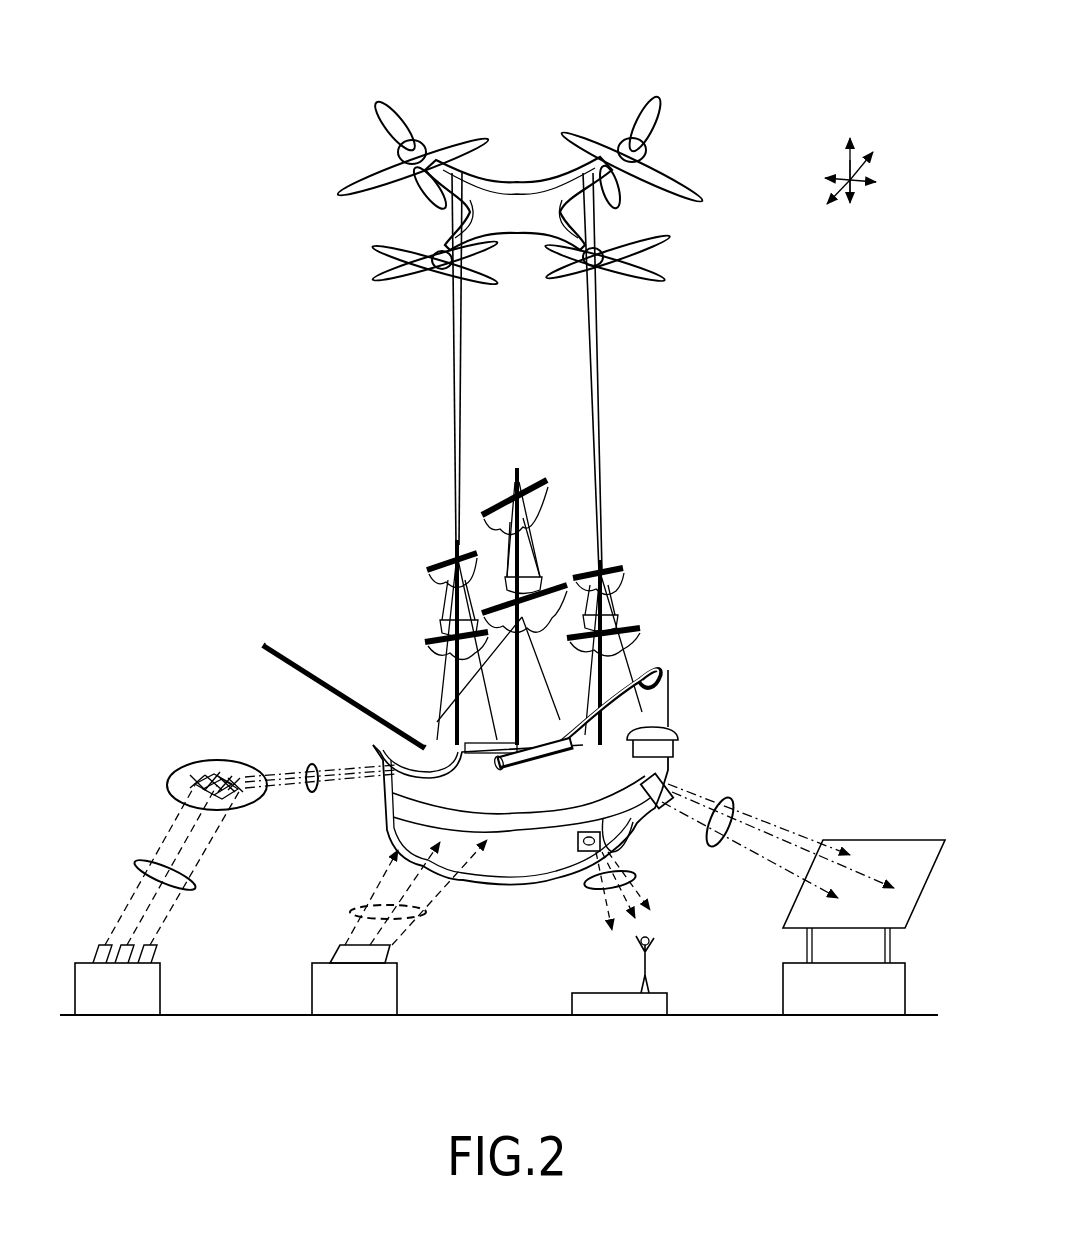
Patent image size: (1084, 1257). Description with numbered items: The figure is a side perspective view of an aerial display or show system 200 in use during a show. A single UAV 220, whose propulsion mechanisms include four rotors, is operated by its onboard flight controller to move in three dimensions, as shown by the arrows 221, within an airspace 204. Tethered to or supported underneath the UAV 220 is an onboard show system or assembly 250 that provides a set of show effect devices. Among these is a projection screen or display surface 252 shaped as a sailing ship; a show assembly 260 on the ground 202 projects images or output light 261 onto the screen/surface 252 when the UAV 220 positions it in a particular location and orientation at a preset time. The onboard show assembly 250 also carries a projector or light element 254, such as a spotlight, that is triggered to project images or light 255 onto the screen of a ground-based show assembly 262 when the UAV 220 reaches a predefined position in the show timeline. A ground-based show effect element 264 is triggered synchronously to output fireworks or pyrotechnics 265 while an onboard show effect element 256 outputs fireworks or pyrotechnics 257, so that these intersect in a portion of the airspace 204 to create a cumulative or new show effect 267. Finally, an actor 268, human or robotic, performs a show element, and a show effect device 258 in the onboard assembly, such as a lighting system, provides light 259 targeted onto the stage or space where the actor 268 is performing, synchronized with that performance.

The aerial display or show system 200 is at (808, 64).
The ground 202 is at (499, 1032).
The airspace 204 is at (185, 414).
The UAV 220 is at (640, 306).
The arrows 221 is at (863, 179).
The onboard show system or assembly 250 is at (515, 704).
The projection screen/display surface 252 is at (535, 850).
The projector/light element 254 is at (680, 770).
The images/light 255 is at (740, 804).
The onboard show effect element 256 is at (517, 780).
The fireworks or pyrotechnics 257 is at (314, 795).
The show effect device 258 is at (607, 830).
The light 259 is at (630, 877).
The show assembly 260 is at (408, 995).
The images or output light 261 is at (428, 920).
The ground-based show assembly 262 is at (770, 990).
The ground-based show effect element 264 is at (172, 977).
The fireworks or pyrotechnics 265 is at (195, 886).
The cumulative or new show effect 267 is at (208, 790).
The actor 268 is at (668, 960).